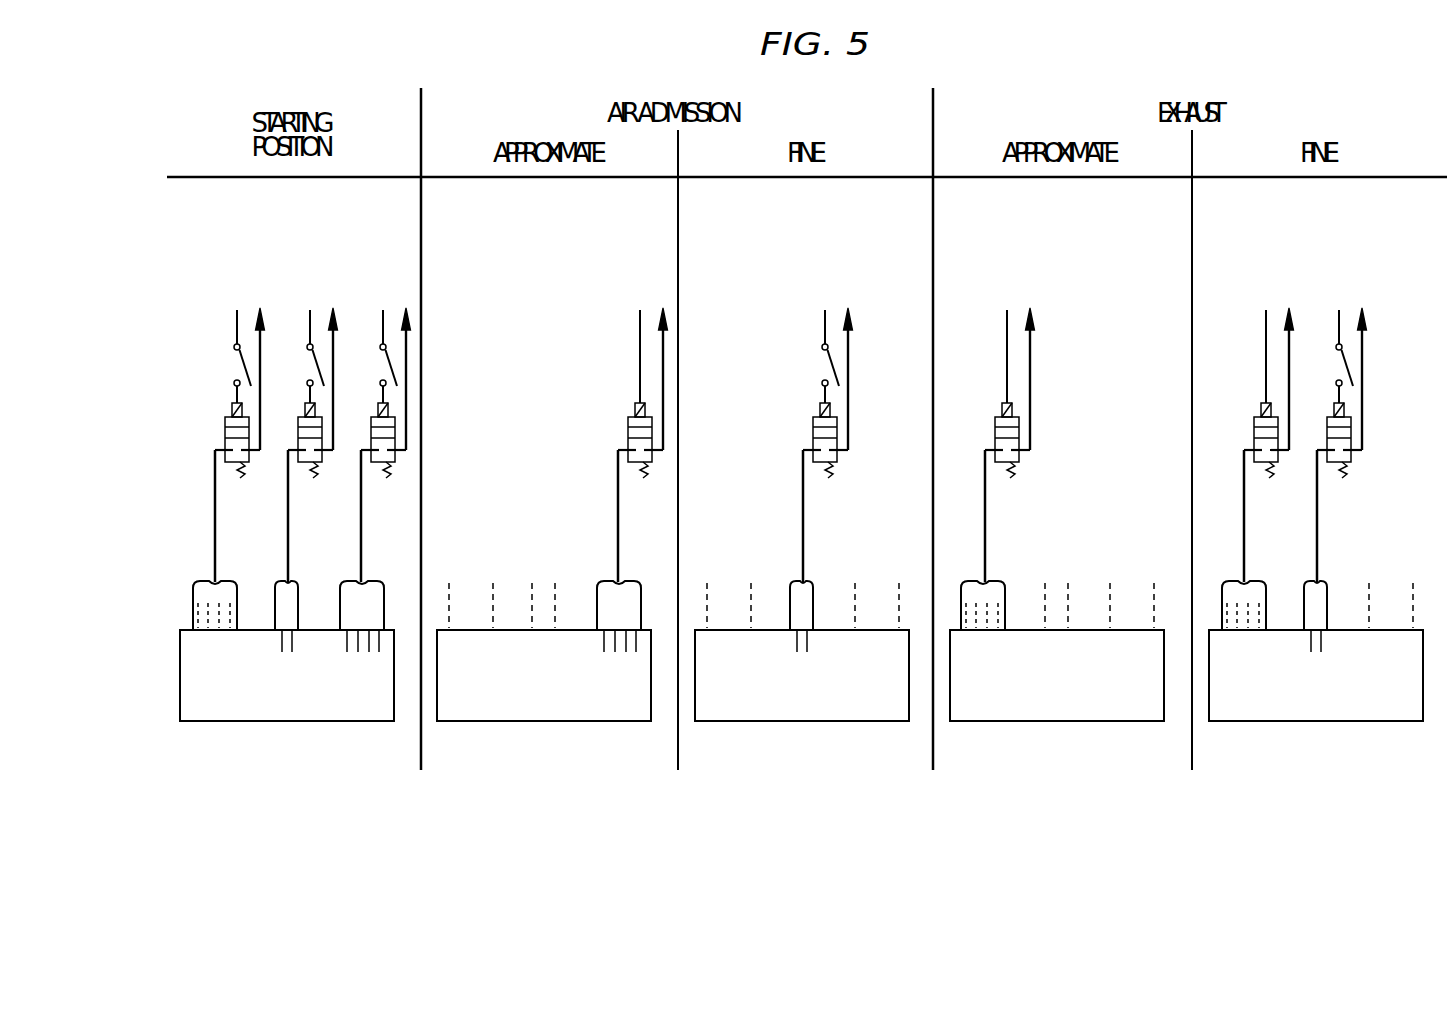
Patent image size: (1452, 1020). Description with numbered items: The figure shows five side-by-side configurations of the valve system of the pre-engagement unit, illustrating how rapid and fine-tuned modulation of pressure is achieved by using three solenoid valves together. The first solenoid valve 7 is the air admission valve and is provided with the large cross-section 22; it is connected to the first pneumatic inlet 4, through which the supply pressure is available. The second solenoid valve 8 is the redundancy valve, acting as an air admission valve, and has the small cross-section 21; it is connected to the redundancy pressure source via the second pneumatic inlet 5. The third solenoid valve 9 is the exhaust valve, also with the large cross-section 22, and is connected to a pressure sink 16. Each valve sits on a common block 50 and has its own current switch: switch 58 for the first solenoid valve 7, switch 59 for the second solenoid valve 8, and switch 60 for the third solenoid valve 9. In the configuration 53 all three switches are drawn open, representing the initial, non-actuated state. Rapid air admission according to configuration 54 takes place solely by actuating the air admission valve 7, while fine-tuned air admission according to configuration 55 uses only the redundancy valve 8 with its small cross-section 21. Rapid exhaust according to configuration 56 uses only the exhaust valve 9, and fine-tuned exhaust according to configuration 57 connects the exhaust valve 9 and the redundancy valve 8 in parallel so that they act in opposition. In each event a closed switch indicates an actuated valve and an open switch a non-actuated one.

The first pneumatic inlet 4 is at (540, 367).
The second pneumatic inlet 5 is at (851, 366).
The pressure sink 16 is at (775, 365).
The first solenoid valve 7 is at (400, 463).
The second solenoid valve 8 is at (325, 463).
The third solenoid valve 9 is at (253, 466).
The small cross-section 21 is at (300, 587).
The large cross-section 22 is at (189, 584).
The valve block / manifold 50 is at (331, 705).
The initial position configuration 53 is at (275, 643).
The rapid air admission configuration 54 is at (533, 641).
The fine-tuned air admission configuration 55 is at (803, 641).
The rapid exhaust configuration 56 is at (1062, 641).
The fine-tuned exhaust configuration 57 is at (1321, 641).
The current switch 58 is at (395, 362).
The current switch 59 is at (322, 362).
The current switch 60 is at (235, 368).